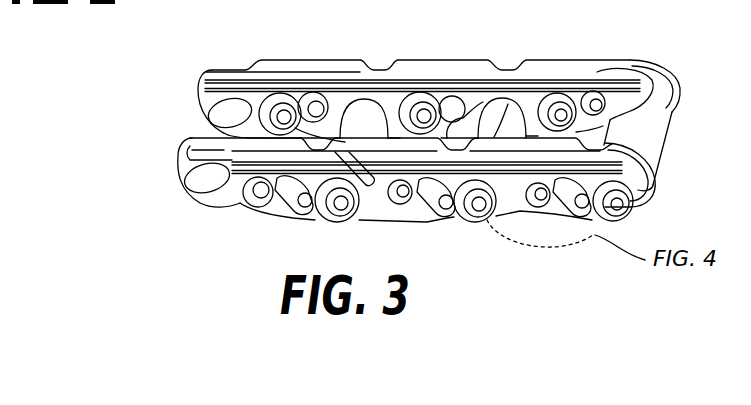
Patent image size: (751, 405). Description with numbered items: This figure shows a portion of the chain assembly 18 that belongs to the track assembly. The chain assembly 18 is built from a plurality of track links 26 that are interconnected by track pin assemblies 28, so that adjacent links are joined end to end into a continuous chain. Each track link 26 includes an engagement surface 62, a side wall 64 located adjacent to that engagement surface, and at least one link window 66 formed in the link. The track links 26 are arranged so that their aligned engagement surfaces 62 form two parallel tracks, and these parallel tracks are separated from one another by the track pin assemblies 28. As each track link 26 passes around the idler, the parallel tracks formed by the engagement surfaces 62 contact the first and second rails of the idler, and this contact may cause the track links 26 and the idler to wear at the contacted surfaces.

The chain assembly 18 is at (150, 217).
The track link 26 is at (199, 100).
The track pin assembly 28 is at (643, 124).
The engagement surface 62 is at (432, 70).
The side wall 64 is at (245, 192).
The link window 66 is at (291, 96).